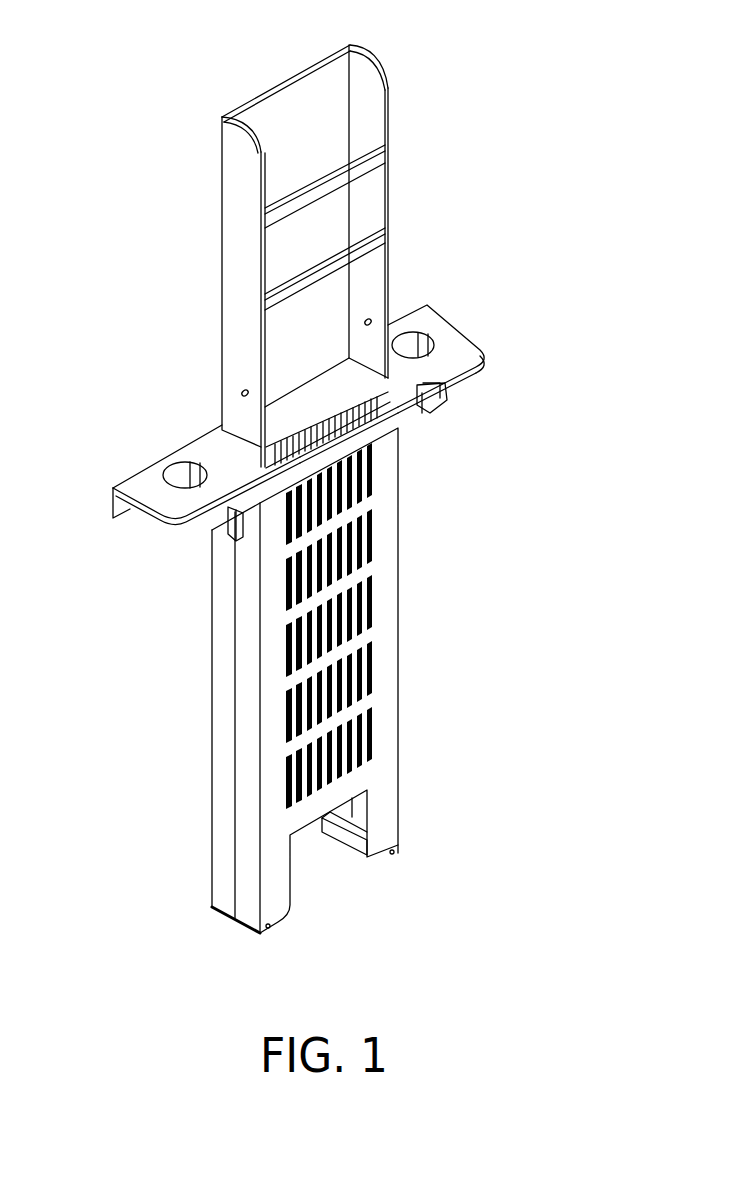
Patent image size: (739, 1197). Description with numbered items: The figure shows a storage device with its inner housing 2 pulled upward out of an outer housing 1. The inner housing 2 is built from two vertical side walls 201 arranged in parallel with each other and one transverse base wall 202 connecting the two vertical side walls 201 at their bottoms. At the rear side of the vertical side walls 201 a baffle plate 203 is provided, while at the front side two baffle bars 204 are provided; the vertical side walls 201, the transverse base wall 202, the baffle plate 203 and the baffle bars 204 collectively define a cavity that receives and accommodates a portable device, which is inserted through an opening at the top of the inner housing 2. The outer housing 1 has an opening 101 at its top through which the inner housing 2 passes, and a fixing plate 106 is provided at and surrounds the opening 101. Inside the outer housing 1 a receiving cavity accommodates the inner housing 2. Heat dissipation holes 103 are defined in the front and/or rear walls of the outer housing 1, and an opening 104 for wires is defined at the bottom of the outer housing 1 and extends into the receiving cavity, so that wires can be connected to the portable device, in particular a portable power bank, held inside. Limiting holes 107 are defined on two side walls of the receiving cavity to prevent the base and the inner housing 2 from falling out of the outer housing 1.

The outer housing 1 is at (340, 665).
The opening 101 is at (413, 403).
The heat dissipation holes 103 is at (363, 686).
The opening for wires 104 is at (303, 823).
The fixing plate 106 is at (448, 357).
The limiting holes 107 is at (232, 520).
The inner housing 2 is at (295, 242).
The vertical side walls 201 is at (368, 128).
The transverse base wall 202 is at (297, 418).
The baffle plate 203 is at (305, 117).
The baffle bars 204 is at (388, 152).